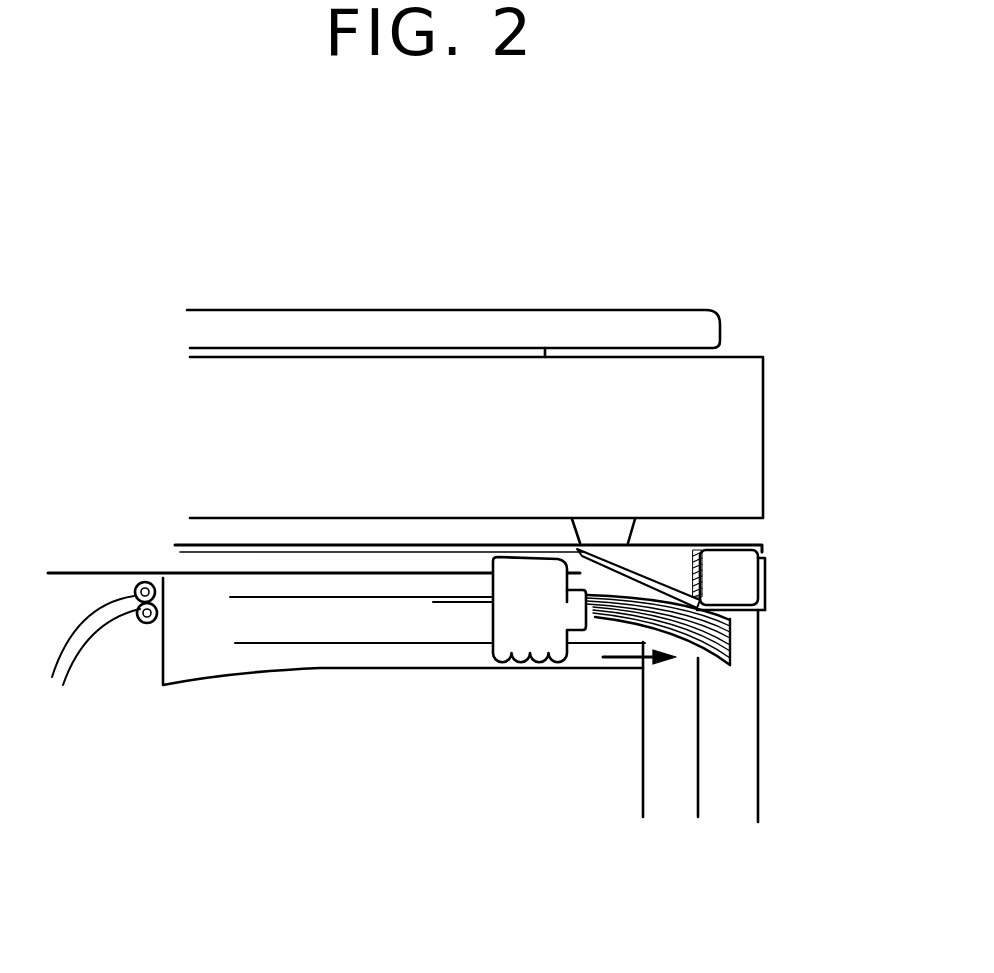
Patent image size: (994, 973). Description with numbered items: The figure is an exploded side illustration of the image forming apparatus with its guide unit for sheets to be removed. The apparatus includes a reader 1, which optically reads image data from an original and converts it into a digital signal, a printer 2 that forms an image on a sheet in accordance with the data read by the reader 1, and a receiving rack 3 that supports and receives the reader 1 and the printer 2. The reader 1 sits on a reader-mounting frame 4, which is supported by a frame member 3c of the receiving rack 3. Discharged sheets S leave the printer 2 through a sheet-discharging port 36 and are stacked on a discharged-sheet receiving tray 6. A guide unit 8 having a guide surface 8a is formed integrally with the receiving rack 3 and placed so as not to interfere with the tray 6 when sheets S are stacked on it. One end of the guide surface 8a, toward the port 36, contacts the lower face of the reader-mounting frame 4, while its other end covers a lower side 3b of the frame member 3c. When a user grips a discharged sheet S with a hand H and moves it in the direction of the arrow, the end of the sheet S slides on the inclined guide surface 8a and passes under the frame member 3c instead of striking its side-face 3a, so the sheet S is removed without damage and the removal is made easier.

The reader 1 is at (747, 405).
The printer 2 is at (610, 721).
The receiving rack 3 is at (742, 631).
The side-face 3a is at (692, 550).
The lower side 3b is at (715, 606).
The frame member 3c is at (743, 565).
The reader-mounting frame 4 is at (335, 543).
The discharged-sheet receiving tray 6 is at (318, 665).
The guide unit 8 is at (763, 601).
The guide surface 8a is at (663, 583).
The sheet-discharging port 36 is at (139, 625).
The hand H is at (505, 627).
The sheet S is at (413, 608).